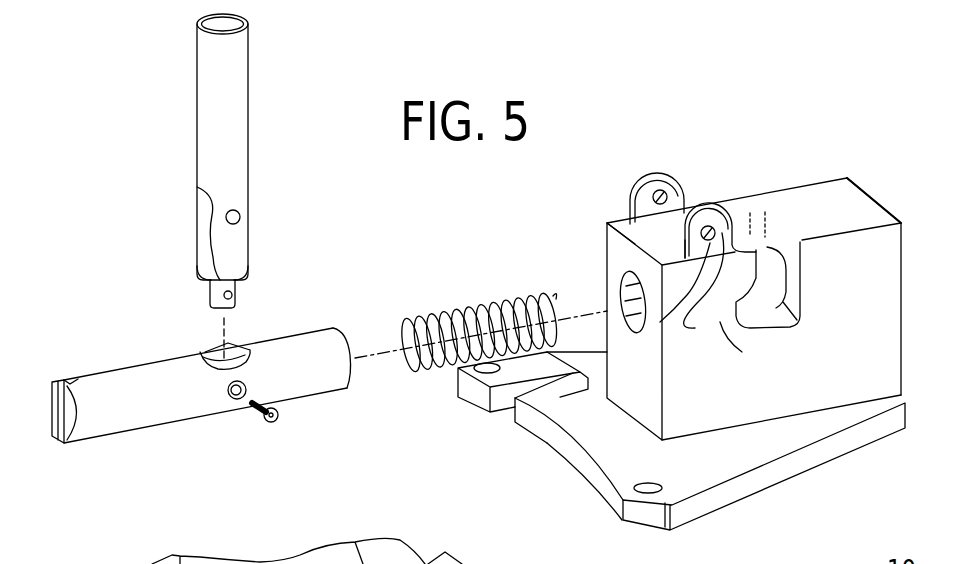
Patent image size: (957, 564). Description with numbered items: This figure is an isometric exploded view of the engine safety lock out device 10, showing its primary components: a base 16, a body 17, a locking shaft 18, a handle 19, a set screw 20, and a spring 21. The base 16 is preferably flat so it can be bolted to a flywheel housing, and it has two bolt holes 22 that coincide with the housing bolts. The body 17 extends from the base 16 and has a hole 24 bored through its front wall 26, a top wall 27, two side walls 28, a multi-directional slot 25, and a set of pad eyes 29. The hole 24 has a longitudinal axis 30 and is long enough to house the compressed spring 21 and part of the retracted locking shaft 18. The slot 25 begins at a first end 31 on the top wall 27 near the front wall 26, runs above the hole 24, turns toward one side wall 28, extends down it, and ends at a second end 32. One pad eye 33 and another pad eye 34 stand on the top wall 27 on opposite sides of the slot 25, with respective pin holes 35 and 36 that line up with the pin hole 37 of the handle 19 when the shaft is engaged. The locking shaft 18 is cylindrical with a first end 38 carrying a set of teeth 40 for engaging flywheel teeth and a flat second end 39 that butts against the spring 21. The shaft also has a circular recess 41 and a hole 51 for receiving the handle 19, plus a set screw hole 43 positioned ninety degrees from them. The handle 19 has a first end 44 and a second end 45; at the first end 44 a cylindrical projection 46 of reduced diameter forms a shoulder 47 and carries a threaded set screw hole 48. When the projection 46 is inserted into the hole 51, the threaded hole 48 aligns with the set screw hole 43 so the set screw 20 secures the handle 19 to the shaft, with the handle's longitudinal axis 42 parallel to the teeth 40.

The engine safety lock out device 10 is at (830, 130).
The base 16 is at (710, 478).
The body 17 is at (711, 266).
The locking shaft 18 is at (195, 397).
The handle 19 is at (225, 181).
The set screw 20 is at (267, 427).
The spring 21 is at (447, 312).
The bolt holes 22 is at (470, 402).
The hole 24 is at (600, 333).
The multi-directional slot 25 is at (760, 215).
The front wall 26 is at (607, 250).
The top wall 27 is at (846, 218).
The side walls 28 is at (713, 422).
The set of pad eyes 29 is at (697, 319).
The longitudinal axis 30 is at (372, 357).
The first end 31 is at (622, 260).
The second end 32 is at (720, 327).
The pad eye 33 is at (660, 157).
The pad eye 34 is at (713, 375).
The pin hole 35 is at (668, 188).
The pin hole 36 is at (677, 267).
The pin hole 37 is at (238, 213).
The first end 38 is at (72, 380).
The second end 39 is at (345, 340).
The set of teeth 40 is at (50, 413).
The circular recess 41 is at (240, 347).
The longitudinal axis 42 is at (217, 332).
The set screw hole 43 is at (233, 398).
The first end 44 is at (210, 283).
The second end 45 is at (217, 25).
The projection 46 is at (237, 303).
The shoulder 47 is at (245, 283).
The threaded set screw hole 48 is at (210, 203).
The hole 51 is at (210, 367).